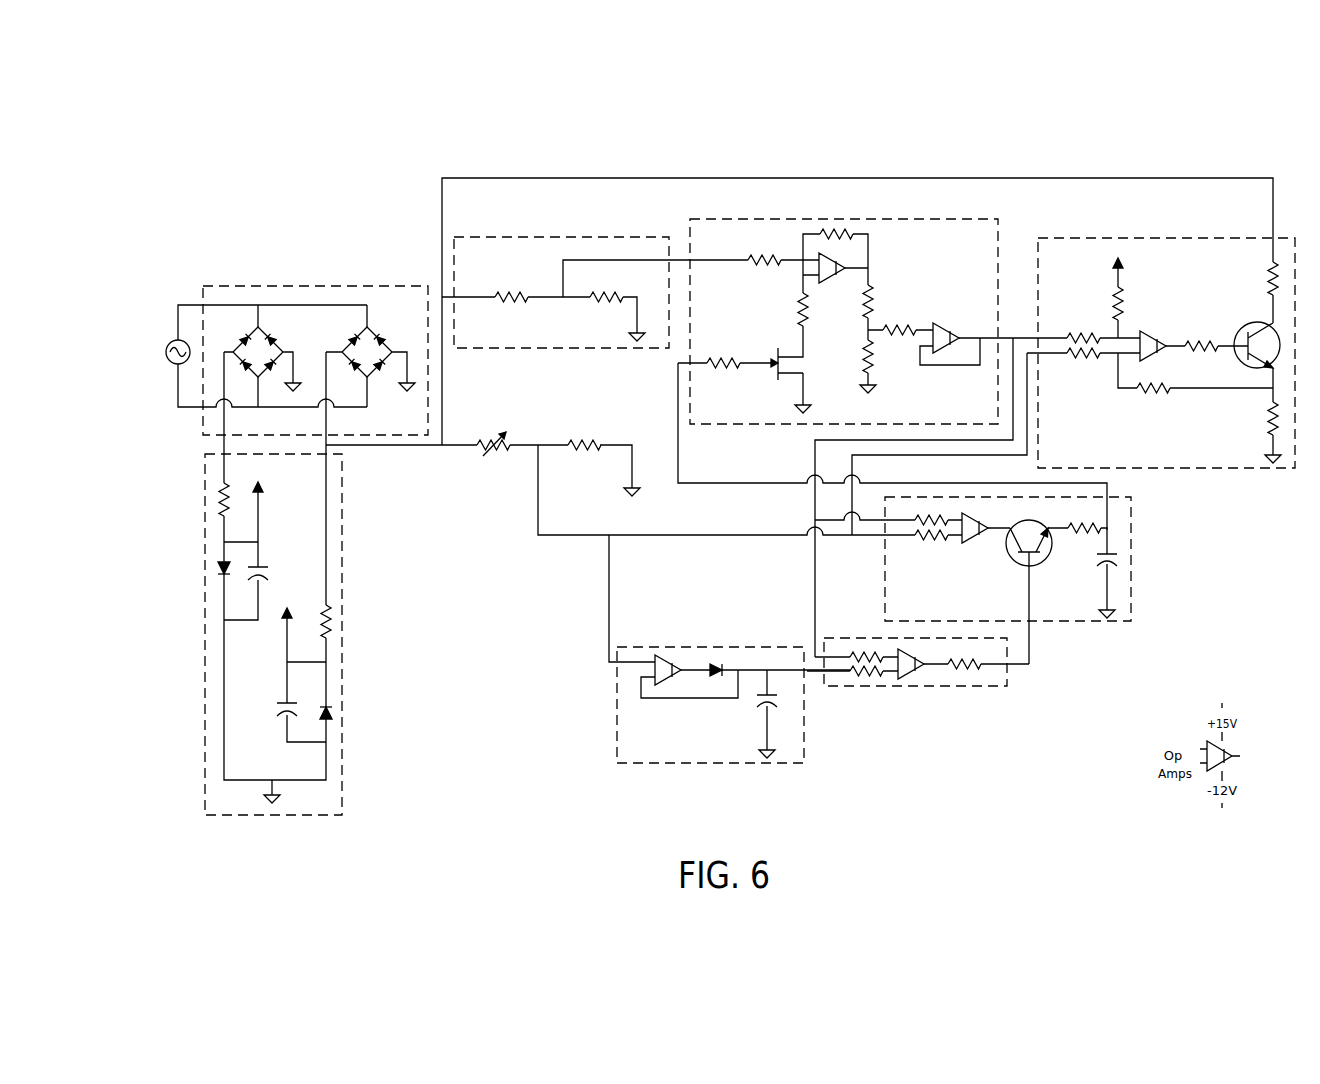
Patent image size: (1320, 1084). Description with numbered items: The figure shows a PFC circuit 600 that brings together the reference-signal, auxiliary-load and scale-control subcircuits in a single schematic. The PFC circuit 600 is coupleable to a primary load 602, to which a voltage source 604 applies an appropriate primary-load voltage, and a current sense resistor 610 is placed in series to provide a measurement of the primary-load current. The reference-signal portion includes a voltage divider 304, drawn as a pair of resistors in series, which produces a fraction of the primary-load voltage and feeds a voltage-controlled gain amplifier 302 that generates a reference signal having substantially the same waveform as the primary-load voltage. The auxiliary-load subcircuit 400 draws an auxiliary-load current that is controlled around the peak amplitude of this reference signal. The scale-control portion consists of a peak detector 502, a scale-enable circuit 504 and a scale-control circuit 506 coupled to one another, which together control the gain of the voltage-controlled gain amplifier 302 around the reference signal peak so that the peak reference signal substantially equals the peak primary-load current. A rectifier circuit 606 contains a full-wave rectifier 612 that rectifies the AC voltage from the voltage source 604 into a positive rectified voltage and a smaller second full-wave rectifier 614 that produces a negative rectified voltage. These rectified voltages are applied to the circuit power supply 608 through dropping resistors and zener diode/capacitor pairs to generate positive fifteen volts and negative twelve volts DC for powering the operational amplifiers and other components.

The PFC circuit 600 is at (357, 183).
The primary load 602 is at (488, 502).
The voltage source 604 is at (164, 372).
The rectifier circuit 606 is at (236, 286).
The circuit power supply 608 is at (342, 632).
The current sense resistor 610 is at (582, 433).
The full-wave rectifier 612 is at (384, 383).
The second full-wave rectifier 614 is at (285, 345).
The voltage-controlled gain amplifier 302 is at (714, 219).
The voltage divider 304 is at (563, 237).
The auxiliary-load subcircuit 400 is at (1169, 238).
The peak detector 502 is at (713, 647).
The scale-enable circuit 504 is at (993, 687).
The scale-control circuit 506 is at (1057, 622).